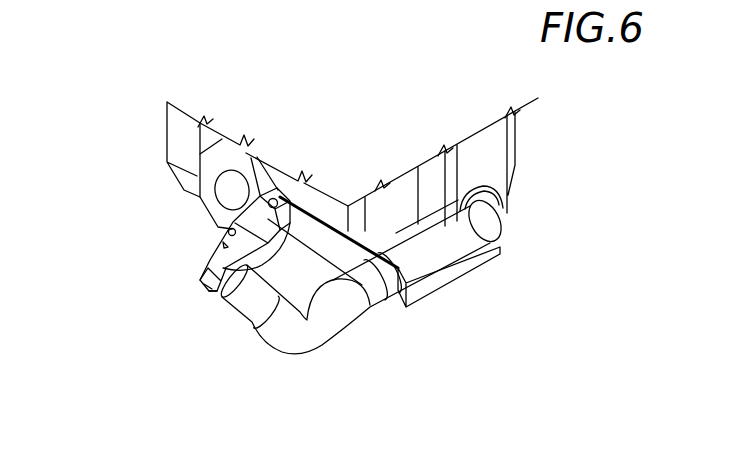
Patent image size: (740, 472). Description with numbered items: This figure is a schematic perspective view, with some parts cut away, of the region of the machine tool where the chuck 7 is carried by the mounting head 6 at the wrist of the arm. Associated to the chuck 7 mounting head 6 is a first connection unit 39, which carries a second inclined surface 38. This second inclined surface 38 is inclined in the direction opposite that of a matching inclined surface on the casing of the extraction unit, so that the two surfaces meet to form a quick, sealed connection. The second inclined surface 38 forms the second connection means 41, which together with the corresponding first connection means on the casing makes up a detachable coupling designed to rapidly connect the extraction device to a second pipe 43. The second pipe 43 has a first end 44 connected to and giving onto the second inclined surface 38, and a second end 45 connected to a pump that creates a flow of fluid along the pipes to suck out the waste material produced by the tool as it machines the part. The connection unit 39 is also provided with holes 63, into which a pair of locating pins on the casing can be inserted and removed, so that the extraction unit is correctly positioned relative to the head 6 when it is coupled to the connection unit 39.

The mounting head 6 is at (165, 135).
The chuck 7 is at (239, 157).
The holes 63 is at (228, 233).
The second inclined surface 38 is at (212, 252).
The second connection means 41 is at (196, 274).
The first connection unit 39 is at (192, 297).
The first end 44 is at (212, 299).
The second pipe 43 is at (360, 320).
The second end 45 is at (495, 200).